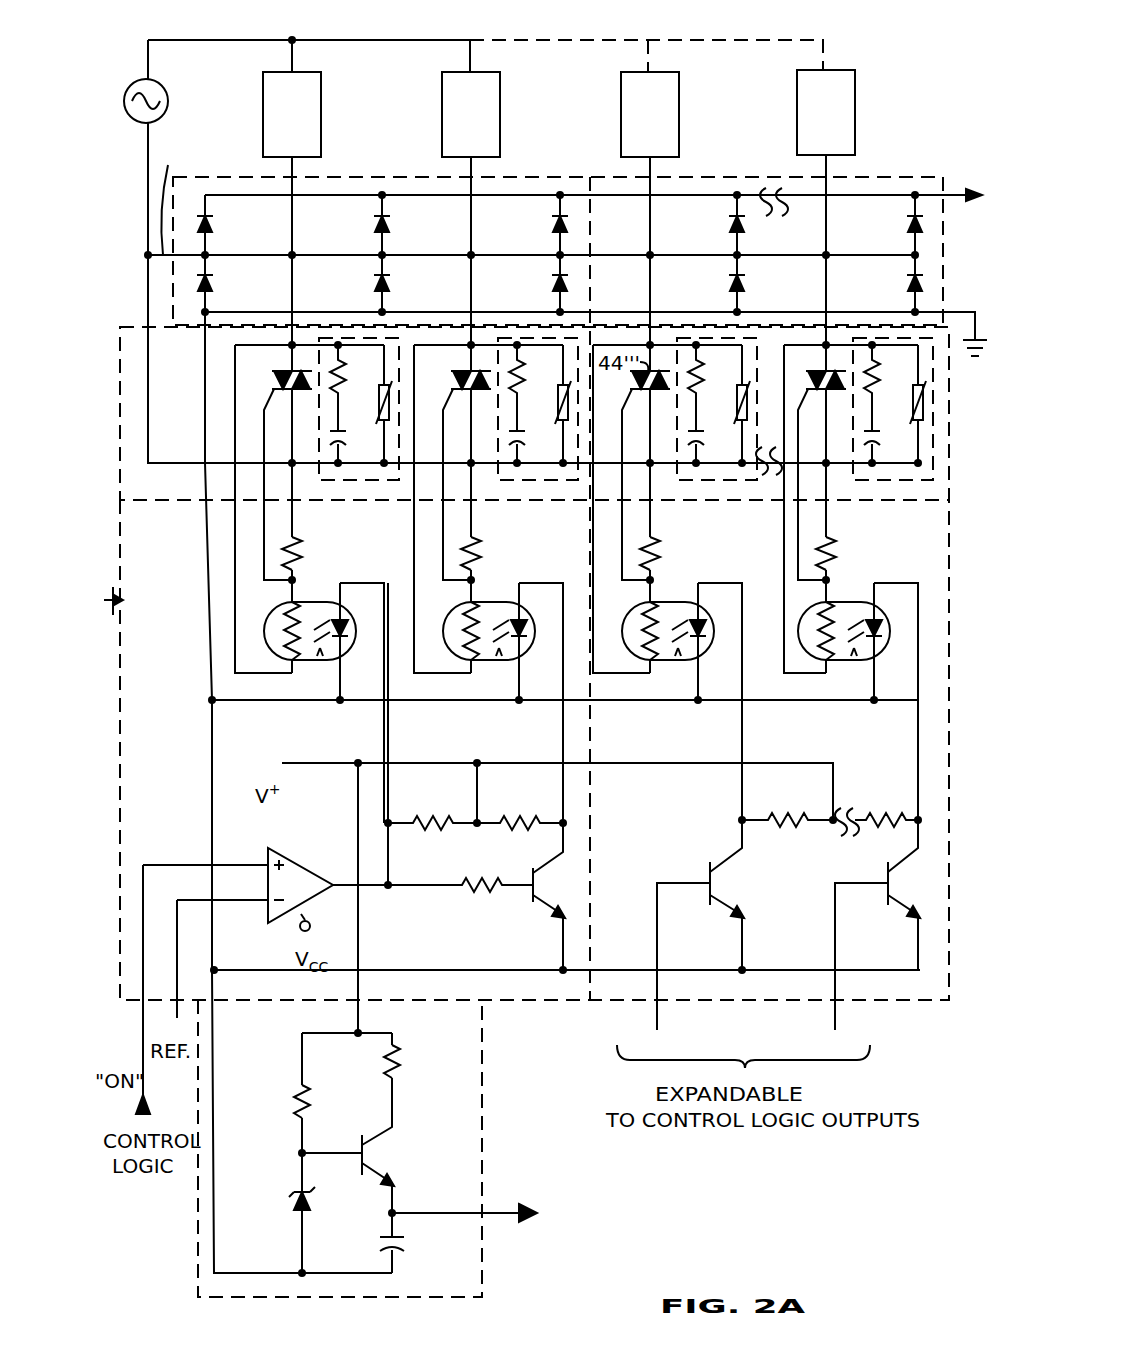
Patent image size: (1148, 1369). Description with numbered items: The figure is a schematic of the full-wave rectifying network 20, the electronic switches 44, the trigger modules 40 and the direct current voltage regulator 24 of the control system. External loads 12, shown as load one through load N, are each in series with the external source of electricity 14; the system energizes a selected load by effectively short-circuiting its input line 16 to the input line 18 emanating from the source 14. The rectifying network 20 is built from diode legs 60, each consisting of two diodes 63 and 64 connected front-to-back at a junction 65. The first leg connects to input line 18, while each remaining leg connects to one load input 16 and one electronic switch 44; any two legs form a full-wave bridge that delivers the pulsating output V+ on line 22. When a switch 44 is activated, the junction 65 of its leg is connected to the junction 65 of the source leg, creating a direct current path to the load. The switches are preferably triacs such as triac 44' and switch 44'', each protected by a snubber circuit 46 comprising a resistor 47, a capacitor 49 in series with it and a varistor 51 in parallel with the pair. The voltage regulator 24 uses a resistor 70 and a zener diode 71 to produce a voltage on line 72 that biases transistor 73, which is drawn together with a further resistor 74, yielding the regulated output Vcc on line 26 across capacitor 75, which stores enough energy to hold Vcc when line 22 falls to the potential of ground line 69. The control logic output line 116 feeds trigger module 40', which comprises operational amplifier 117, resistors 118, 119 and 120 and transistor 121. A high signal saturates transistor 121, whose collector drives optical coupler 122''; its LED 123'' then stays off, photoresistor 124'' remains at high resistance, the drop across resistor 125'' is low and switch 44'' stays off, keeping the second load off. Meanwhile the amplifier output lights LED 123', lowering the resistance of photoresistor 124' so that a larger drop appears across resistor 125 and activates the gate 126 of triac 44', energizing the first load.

The external load 12 is at (321, 131).
The external source of electricity 14 is at (156, 82).
The input line 16 is at (295, 171).
The input line 18 is at (176, 197).
The full-wave rectifying network 20 is at (221, 165).
The output line 22 is at (957, 184).
The direct current voltage regulator 24 is at (496, 1090).
The output line 26 is at (495, 1211).
The trigger module 40 is at (520, 750).
The trigger module 40' is at (414, 588).
The electronic switch 44 is at (518, 446).
The triac 44' is at (275, 470).
The electronic switch 44'' is at (456, 369).
The snubber circuit 46 is at (345, 486).
The resistor 47 is at (340, 383).
The capacitor 49 is at (352, 432).
The varistor 51 is at (379, 395).
The diode leg 60 is at (229, 261).
The diode 63 is at (210, 280).
The diode 64 is at (210, 224).
The junction 65 is at (207, 253).
The ground line 69 is at (387, 287).
The resistor 70 is at (308, 1094).
The zener diode 71 is at (316, 1212).
The line 72 is at (334, 1150).
The transistor 73 is at (397, 1139).
The resistor 74 is at (402, 1073).
The capacitor 75 is at (404, 1231).
The output line 116 is at (145, 1061).
The operational amplifier 117 is at (298, 868).
The resistor 118 is at (430, 831).
The resistor 119 is at (515, 831).
The resistor 120 is at (475, 895).
The transistor 121 is at (530, 906).
The optical coupler 122'' is at (502, 609).
The light emitting diode 123' is at (322, 642).
The light emitting diode 123'' is at (497, 641).
The photoresistor 124' is at (298, 623).
The photoresistor 124'' is at (449, 621).
The resistor 125 is at (599, 553).
The resistor 125'' is at (511, 552).
The gate 126 is at (447, 412).